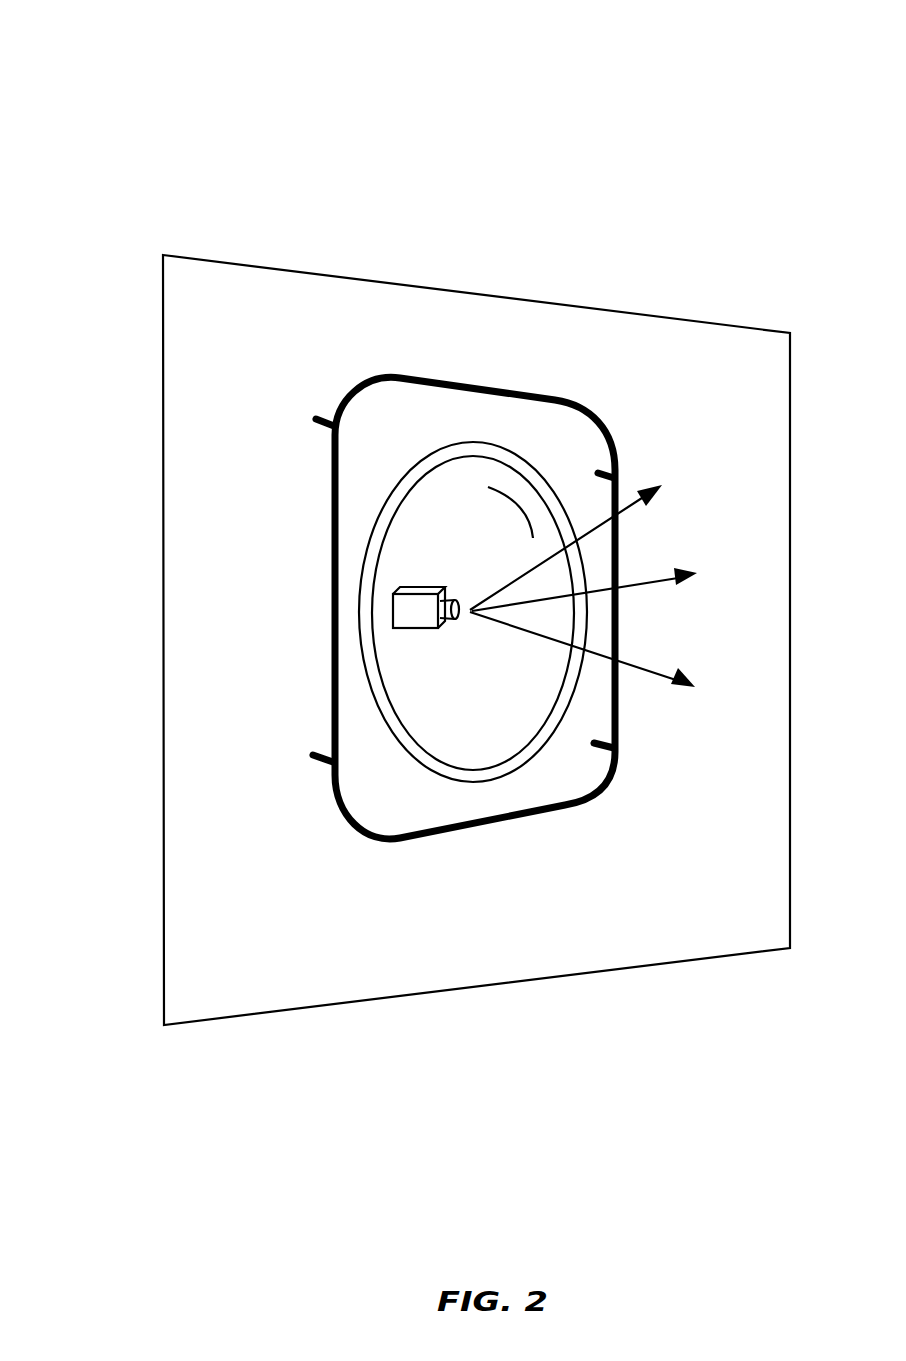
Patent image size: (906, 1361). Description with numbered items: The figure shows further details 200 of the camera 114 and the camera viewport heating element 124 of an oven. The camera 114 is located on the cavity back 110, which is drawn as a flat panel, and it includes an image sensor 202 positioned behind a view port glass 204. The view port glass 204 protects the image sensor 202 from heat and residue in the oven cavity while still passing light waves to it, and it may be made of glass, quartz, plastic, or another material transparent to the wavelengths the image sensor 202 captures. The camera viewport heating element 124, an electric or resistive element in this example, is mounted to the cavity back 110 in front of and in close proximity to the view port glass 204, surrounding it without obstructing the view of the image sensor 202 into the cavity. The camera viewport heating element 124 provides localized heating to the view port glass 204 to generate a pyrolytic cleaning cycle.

The further details of the camera and camera viewport heating element 200 is at (160, 40).
The cavity back 110 is at (667, 417).
The camera viewport heating element 124 is at (446, 382).
The camera 114 is at (514, 449).
The view port glass 204 is at (420, 515).
The image sensor 202 is at (392, 614).